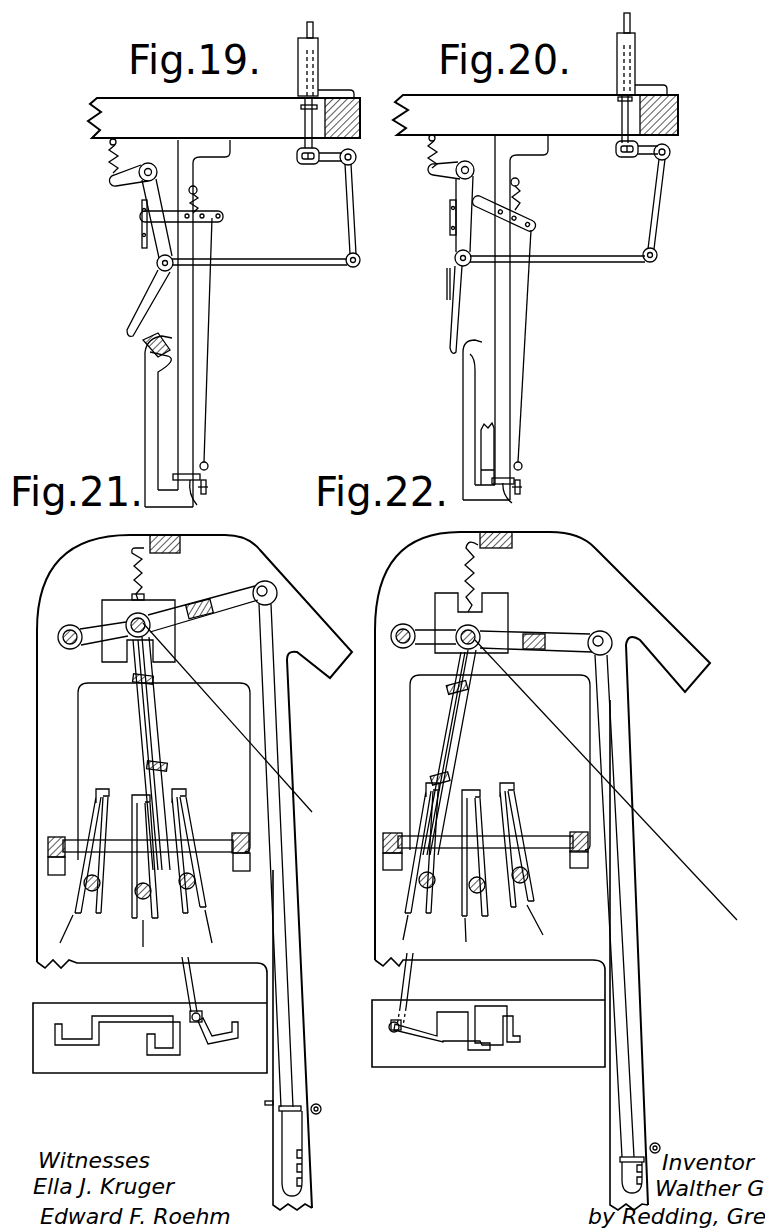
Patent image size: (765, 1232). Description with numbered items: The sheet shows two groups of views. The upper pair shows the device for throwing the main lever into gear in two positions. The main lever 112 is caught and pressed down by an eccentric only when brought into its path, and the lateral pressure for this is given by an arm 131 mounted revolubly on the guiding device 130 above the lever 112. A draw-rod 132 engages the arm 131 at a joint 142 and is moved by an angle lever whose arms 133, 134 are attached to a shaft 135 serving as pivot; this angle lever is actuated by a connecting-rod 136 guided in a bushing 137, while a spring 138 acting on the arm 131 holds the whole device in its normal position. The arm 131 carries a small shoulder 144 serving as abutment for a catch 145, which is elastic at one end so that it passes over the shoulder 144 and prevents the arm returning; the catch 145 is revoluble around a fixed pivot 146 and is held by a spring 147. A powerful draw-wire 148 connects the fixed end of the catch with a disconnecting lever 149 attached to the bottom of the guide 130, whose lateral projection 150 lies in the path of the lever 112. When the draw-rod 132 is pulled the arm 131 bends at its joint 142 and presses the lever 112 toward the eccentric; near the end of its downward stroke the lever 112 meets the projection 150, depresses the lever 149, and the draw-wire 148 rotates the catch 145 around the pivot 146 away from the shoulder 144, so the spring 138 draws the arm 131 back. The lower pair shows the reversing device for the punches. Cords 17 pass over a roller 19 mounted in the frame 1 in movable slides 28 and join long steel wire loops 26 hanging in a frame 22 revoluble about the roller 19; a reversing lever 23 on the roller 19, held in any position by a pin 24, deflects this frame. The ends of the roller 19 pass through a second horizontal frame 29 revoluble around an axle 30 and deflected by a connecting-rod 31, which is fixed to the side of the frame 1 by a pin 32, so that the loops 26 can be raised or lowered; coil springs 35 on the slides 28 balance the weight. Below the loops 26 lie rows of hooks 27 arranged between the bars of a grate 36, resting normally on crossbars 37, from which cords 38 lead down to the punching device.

In FIG. 21, the frame 1 is at (318, 628).
In FIG. 22, the frame 1 is at (669, 633).
In FIG. 21, the cords 17 is at (231, 717).
In FIG. 22, the cords 17 is at (606, 780).
In FIG. 21, the roller 19 is at (152, 611).
In FIG. 22, the roller 19 is at (483, 632).
In FIG. 21, the frame 22 is at (160, 733).
In FIG. 22, the frame 22 is at (450, 744).
In FIG. 21, the reversing lever 23 is at (186, 985).
In FIG. 22, the reversing lever 23 is at (404, 976).
In FIG. 21, the pin 24 is at (194, 1024).
In FIG. 22, the pin 24 is at (392, 1033).
In FIG. 21, the steel wire loops 26 is at (145, 741).
In FIG. 22, the steel wire loops 26 is at (446, 740).
In FIG. 21, the hooks 27 is at (158, 797).
In FIG. 22, the hooks 27 is at (505, 800).
In FIG. 21, the slides 28 is at (128, 604).
In FIG. 22, the slides 28 is at (460, 602).
In FIG. 21, the horizontal frame 29 is at (186, 618).
In FIG. 22, the horizontal frame 29 is at (520, 640).
In FIG. 21, the axle 30 is at (70, 625).
In FIG. 22, the axle 30 is at (403, 624).
In FIG. 21, the connecting-rod 31 is at (278, 855).
In FIG. 22, the connecting-rod 31 is at (615, 920).
In FIG. 21, the pin 32 is at (317, 1096).
In FIG. 22, the pin 32 is at (666, 1137).
In FIG. 21, the coil springs 35 is at (143, 580).
In FIG. 22, the coil springs 35 is at (473, 570).
In FIG. 21, the grate 36 is at (55, 837).
In FIG. 21, the crossbars 37 is at (100, 887).
In FIG. 22, the crossbars 37 is at (435, 882).
In FIG. 21, the cords 38 is at (212, 916).
In FIG. 22, the cords 38 is at (410, 925).
In FIG. 19, the lever 112 is at (150, 347).
In FIG. 20, the lever 112 is at (487, 476).
In FIG. 19, the guiding device 130 is at (188, 414).
In FIG. 20, the guiding device 130 is at (502, 390).
In FIG. 19, the arm 131 is at (140, 318).
In FIG. 19, the draw-rod 132 is at (272, 262).
In FIG. 20, the draw-rod 132 is at (597, 254).
In FIG. 19, the arm of angle lever 133 is at (352, 212).
In FIG. 20, the arm of angle lever 133 is at (656, 208).
In FIG. 19, the arm of angle lever 134 is at (328, 162).
In FIG. 20, the arm of angle lever 134 is at (645, 156).
In FIG. 19, the shaft 135 is at (351, 163).
In FIG. 20, the shaft 135 is at (667, 159).
In FIG. 19, the connecting-rod 136 is at (314, 28).
In FIG. 20, the connecting-rod 136 is at (631, 22).
In FIG. 19, the bushing 137 is at (316, 58).
In FIG. 20, the bushing 137 is at (633, 56).
In FIG. 19, the spring 138 is at (110, 170).
In FIG. 20, the spring 138 is at (430, 152).
In FIG. 19, the joint 142 is at (157, 267).
In FIG. 20, the joint 142 is at (457, 264).
In FIG. 20, the shoulder 144 is at (470, 226).
In FIG. 19, the catch 145 is at (160, 220).
In FIG. 20, the catch 145 is at (470, 212).
In FIG. 19, the pivot 146 is at (197, 187).
In FIG. 20, the pivot 146 is at (520, 184).
In FIG. 19, the spring 147 is at (204, 206).
In FIG. 20, the spring 147 is at (522, 208).
In FIG. 19, the draw-wire 148 is at (207, 345).
In FIG. 20, the draw-wire 148 is at (528, 340).
In FIG. 19, the lever 149 is at (208, 468).
In FIG. 20, the lever 149 is at (522, 468).
In FIG. 19, the lateral projection 150 is at (199, 503).
In FIG. 20, the lateral projection 150 is at (513, 503).